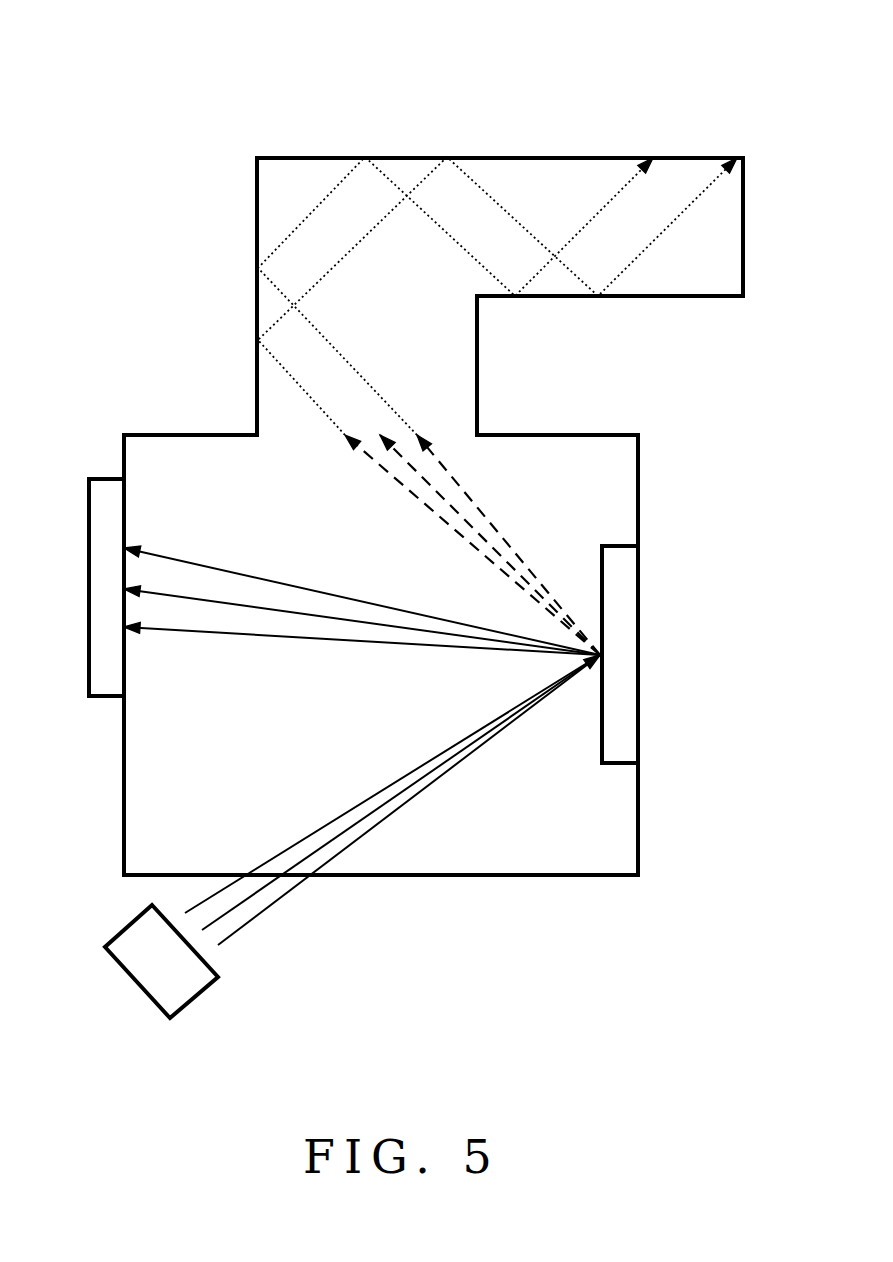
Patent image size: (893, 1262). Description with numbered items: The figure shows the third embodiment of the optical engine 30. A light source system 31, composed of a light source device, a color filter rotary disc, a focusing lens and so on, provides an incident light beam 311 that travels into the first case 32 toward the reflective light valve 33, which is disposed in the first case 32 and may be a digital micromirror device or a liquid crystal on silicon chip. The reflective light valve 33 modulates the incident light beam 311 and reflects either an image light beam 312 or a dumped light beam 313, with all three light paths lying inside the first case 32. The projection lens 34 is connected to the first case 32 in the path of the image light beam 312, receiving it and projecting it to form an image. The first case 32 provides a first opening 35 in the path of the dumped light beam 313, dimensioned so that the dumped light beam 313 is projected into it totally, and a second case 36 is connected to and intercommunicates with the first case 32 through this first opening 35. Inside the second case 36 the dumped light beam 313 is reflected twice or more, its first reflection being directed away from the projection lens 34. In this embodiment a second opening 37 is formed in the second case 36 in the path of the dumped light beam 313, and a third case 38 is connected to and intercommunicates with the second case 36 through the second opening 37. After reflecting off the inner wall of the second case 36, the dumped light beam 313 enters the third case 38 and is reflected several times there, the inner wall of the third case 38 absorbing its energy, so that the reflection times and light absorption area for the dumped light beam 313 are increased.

The optical engine 30 is at (722, 72).
The light source system 31 is at (142, 968).
The first case 32 is at (640, 818).
The reflective light valve 33 is at (623, 610).
The projection lens 34 is at (100, 574).
The first opening 35 is at (290, 443).
The second case 36 is at (256, 208).
The second opening 37 is at (473, 282).
The third case 38 is at (500, 157).
The incident light beam 311 is at (360, 797).
The image light beam 312 is at (247, 638).
The dumped light beam 313 is at (493, 532).